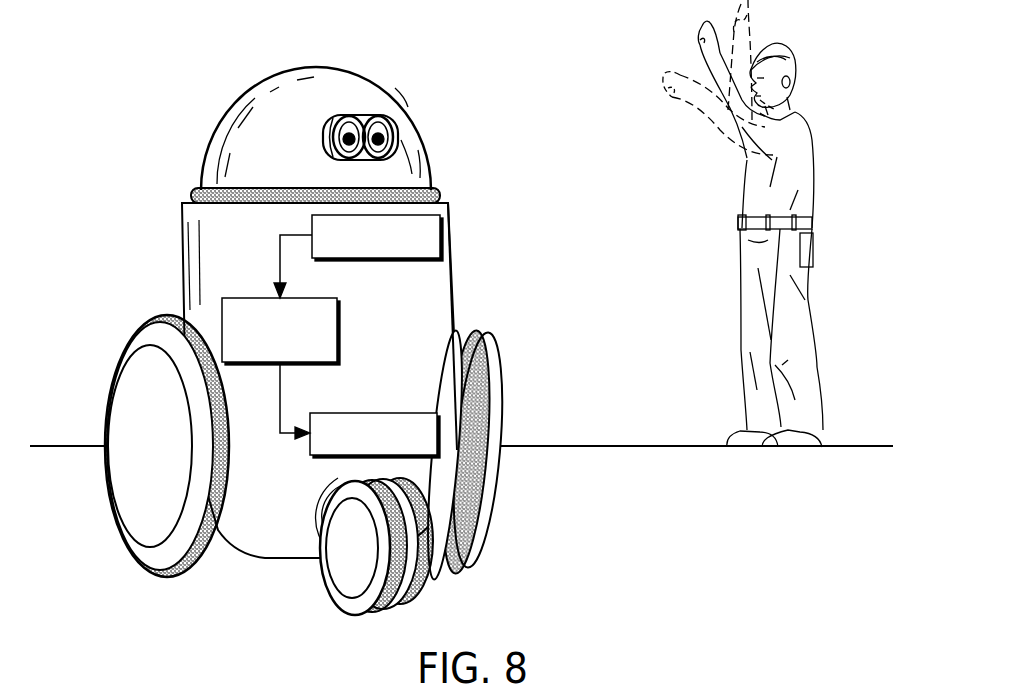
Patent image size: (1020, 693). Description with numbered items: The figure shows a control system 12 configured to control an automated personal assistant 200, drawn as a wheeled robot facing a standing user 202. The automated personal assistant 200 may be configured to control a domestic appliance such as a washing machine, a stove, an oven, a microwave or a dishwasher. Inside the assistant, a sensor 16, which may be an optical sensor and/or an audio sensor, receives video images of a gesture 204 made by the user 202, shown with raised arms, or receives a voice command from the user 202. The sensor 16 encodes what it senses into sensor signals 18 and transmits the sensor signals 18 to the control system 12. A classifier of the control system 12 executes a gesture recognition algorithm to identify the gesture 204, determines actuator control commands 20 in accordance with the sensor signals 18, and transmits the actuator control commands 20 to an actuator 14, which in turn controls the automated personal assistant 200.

The automated personal assistant 200 is at (307, 329).
The user 202 is at (763, 223).
The gesture 204 is at (702, 27).
The sensor 16 is at (400, 258).
The control system 12 is at (337, 332).
The actuator 14 is at (393, 413).
The sensor signals 18 is at (280, 258).
The actuator control commands 20 is at (280, 385).